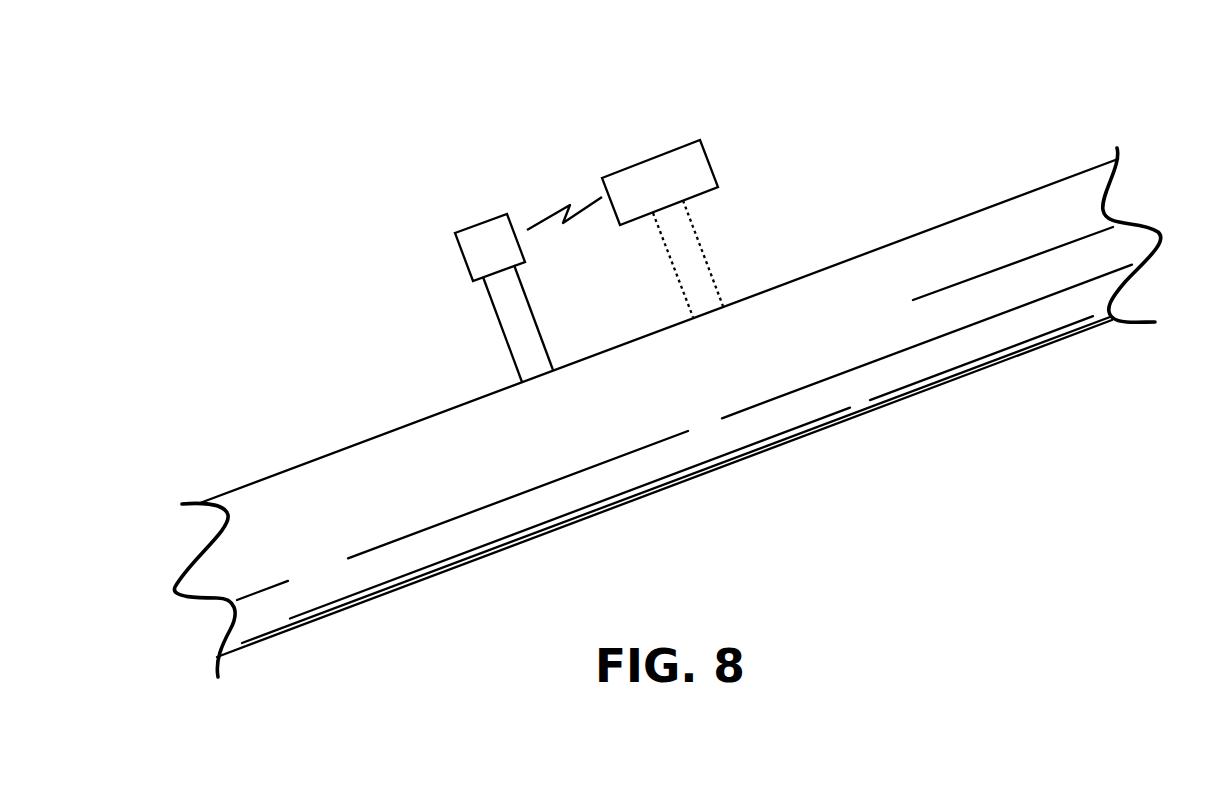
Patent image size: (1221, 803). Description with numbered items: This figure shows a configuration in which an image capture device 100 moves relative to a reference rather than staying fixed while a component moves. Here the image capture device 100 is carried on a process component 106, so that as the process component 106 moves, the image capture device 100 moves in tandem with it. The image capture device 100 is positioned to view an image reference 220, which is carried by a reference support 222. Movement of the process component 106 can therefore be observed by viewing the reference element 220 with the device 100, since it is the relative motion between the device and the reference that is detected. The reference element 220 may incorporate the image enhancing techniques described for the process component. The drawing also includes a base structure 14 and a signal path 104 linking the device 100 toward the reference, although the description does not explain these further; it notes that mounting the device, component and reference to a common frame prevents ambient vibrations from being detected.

The panel 14 is at (912, 332).
The image capture device 100 is at (460, 261).
The wireless signal 104 is at (546, 215).
The process component 106 is at (510, 317).
The image reference 220 is at (685, 177).
The reference support 222 is at (690, 257).